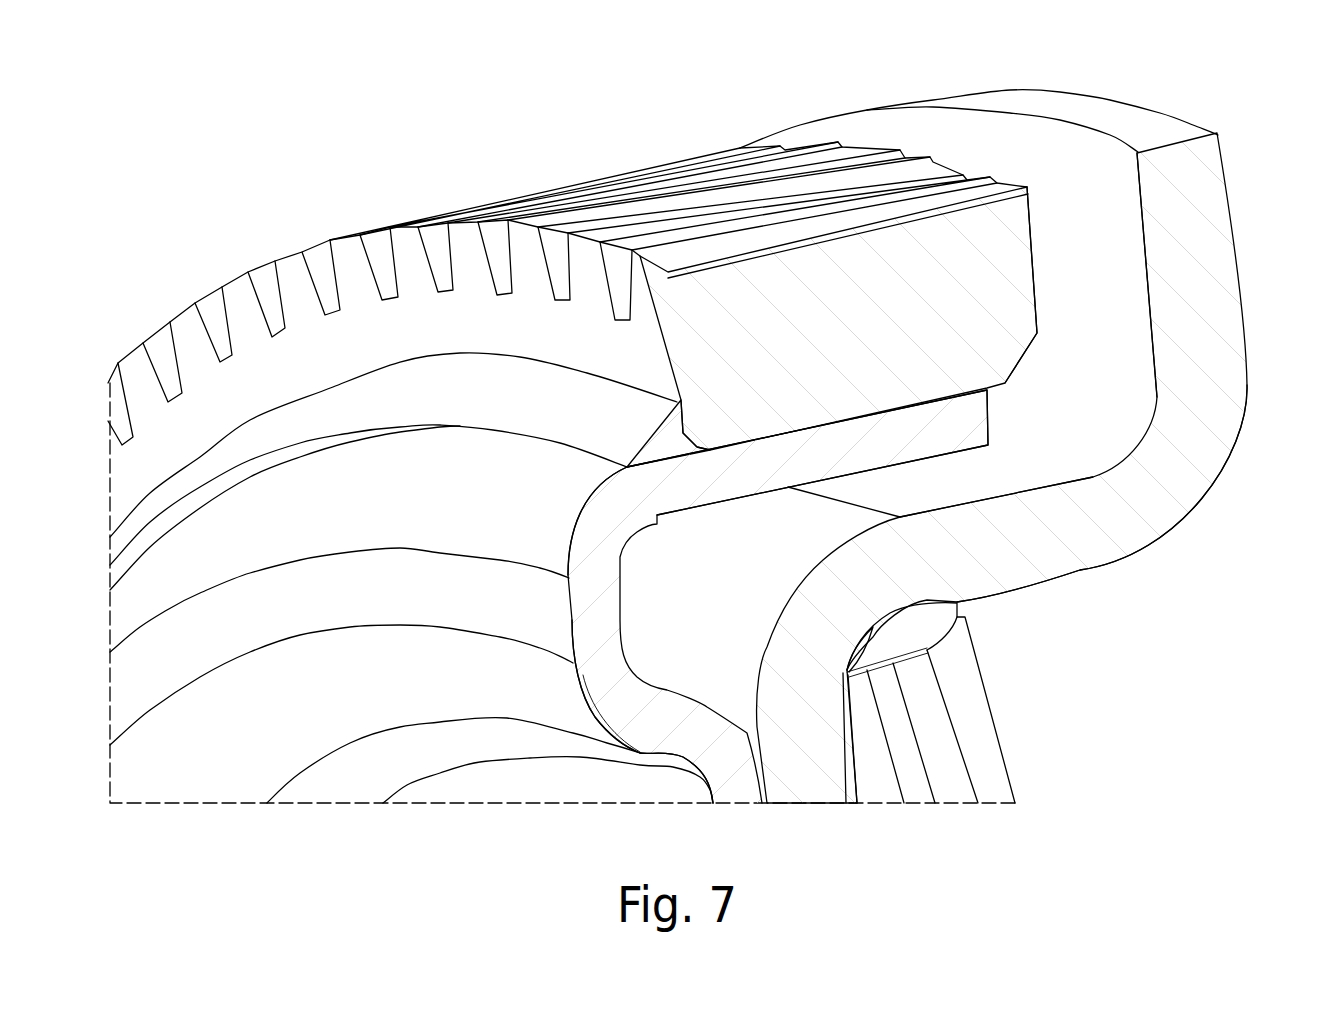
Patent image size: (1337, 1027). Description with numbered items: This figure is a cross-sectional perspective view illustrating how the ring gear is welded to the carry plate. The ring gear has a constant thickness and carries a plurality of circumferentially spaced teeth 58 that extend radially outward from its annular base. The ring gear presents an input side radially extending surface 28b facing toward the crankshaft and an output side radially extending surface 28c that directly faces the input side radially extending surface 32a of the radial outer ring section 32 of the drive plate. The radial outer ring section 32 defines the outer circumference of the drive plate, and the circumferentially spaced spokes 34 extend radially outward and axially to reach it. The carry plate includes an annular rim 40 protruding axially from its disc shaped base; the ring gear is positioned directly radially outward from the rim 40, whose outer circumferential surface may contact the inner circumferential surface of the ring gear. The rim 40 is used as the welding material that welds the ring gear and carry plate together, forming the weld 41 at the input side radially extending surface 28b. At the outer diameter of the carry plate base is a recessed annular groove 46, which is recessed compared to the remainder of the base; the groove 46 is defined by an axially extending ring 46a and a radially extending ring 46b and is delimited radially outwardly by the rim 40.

The weld 41 is at (440, 397).
The teeth 58 is at (530, 283).
The input side radially extending surface 28b is at (643, 353).
The output side radially extending surface 28c is at (1033, 247).
The radial outer ring section 32 is at (1193, 277).
The input side radially extending surface 32a is at (1133, 325).
The annular rim 40 is at (792, 473).
The spokes 34 is at (1012, 560).
The recessed annular groove 46 is at (621, 613).
The axially extending ring 46a is at (683, 713).
The radially extending ring 46b is at (597, 597).